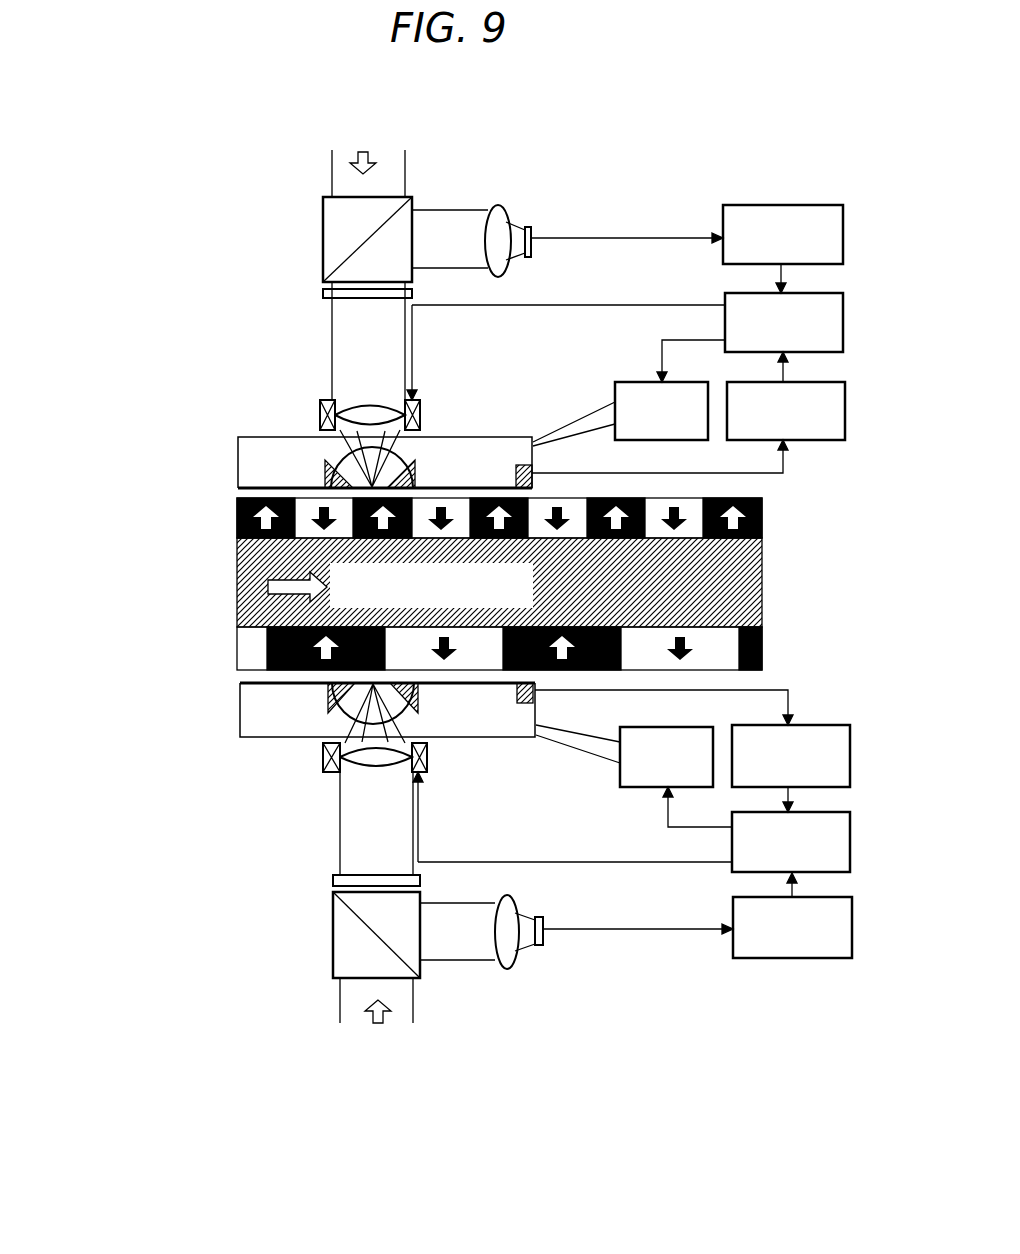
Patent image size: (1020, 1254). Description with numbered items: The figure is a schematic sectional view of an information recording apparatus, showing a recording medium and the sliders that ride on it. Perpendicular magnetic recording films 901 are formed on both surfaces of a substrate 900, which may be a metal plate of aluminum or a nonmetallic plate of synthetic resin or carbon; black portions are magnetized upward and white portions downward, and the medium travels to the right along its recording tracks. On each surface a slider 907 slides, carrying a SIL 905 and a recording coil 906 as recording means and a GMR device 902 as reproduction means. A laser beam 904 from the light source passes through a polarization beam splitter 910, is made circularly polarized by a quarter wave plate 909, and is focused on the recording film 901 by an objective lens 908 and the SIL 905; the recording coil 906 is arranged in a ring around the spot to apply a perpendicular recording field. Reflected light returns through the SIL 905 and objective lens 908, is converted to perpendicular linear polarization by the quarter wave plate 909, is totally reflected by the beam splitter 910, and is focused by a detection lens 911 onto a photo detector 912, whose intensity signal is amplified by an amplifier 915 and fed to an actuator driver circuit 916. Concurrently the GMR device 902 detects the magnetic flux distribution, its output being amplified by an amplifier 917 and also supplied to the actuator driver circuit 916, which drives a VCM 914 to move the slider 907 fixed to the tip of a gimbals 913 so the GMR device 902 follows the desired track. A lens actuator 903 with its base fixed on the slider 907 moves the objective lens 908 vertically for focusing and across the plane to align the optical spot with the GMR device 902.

The substrate 900 is at (237, 585).
The perpendicular magnetic recording film 901 is at (187, 705).
The GMR device 902 is at (533, 468).
The lens actuator 903 is at (441, 791).
The laser beam 904 is at (377, 1060).
The SIL 905 is at (350, 465).
The recording coil 906 is at (470, 748).
The slider 907 is at (268, 445).
The objective lens 908 is at (303, 842).
The quarter wave plate 909 is at (295, 908).
The polarization beam splitter 910 is at (298, 1002).
The detection lens 911 is at (500, 1000).
The photo detector 912 is at (588, 960).
The gimbals 913 is at (600, 808).
The VCM 914 is at (662, 379).
The amplifier 915 is at (782, 205).
The actuator driver circuit 916 is at (729, 293).
The amplifier 917 is at (807, 441).